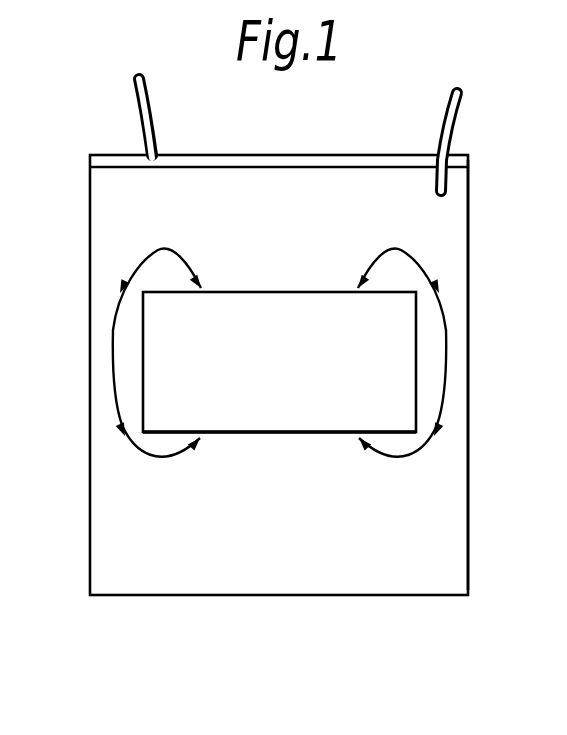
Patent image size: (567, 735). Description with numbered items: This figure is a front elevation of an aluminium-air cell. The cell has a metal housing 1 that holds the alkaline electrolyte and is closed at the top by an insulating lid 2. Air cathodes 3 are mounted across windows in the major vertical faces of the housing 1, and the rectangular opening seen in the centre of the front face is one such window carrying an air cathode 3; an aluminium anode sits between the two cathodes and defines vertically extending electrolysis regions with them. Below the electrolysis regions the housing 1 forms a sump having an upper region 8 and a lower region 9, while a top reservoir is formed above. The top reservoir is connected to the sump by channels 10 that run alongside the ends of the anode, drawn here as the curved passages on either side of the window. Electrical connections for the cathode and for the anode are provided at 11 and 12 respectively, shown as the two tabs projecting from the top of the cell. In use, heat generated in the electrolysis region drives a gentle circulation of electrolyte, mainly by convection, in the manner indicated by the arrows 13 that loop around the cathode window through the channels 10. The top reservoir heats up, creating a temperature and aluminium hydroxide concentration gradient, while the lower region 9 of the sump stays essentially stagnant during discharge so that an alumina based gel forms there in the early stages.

The housing 1 is at (103, 546).
The insulating lid 2 is at (265, 155).
The air cathodes 3 is at (283, 313).
The upper region of sump 8 is at (295, 457).
The lower region of sump 9 is at (426, 547).
The channels 10 is at (116, 319).
The cathode electrical connection 11 is at (446, 112).
The anode electrical connection 12 is at (133, 107).
The arrows 13 is at (428, 270).